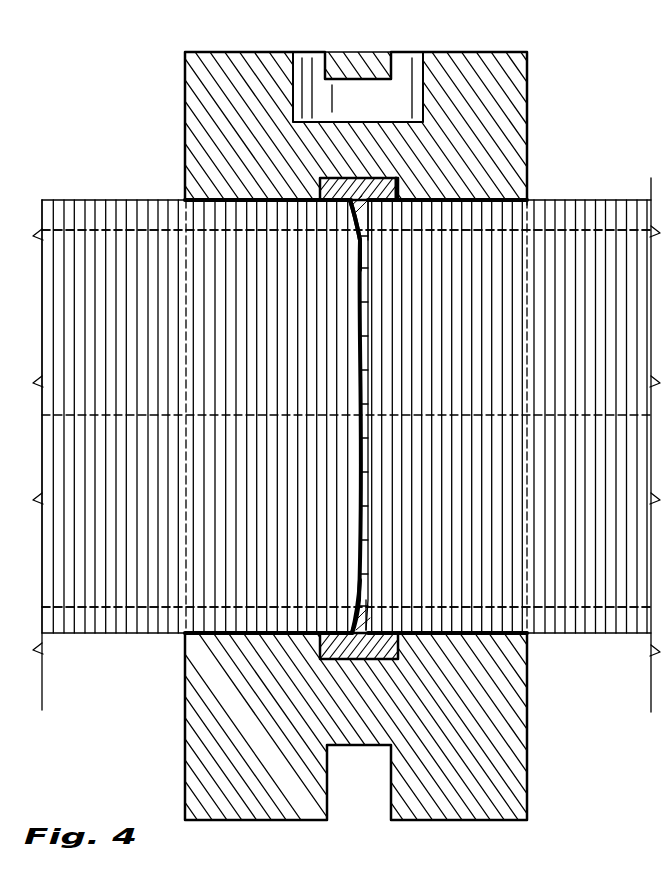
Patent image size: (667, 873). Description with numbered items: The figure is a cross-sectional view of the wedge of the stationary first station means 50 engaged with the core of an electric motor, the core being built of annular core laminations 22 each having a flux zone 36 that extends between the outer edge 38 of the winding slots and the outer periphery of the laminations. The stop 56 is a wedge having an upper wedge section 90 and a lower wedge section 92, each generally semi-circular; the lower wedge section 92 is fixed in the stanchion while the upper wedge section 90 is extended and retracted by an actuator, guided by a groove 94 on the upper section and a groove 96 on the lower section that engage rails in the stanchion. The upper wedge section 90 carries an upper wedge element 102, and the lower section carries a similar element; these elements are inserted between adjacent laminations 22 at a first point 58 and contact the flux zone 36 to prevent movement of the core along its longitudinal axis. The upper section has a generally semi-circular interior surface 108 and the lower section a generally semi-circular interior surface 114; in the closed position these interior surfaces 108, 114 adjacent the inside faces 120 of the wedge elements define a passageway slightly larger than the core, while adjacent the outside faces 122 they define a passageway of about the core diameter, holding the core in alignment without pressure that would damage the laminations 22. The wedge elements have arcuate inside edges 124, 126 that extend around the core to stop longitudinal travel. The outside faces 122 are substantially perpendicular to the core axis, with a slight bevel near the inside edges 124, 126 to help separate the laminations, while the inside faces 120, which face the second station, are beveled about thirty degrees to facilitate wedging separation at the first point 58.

The core laminations 22 is at (630, 210).
The flux zone 36 is at (3, 230).
The outer edge of the slots 38 is at (97, 240).
The first station means 50 is at (536, 48).
The stop (wedge) 56 is at (346, 640).
The first point 58 is at (368, 286).
The upper wedge section 90 is at (512, 93).
The lower wedge section 92 is at (470, 765).
The groove 94 is at (334, 62).
The groove 96 is at (391, 790).
The upper wedge element 102 is at (352, 196).
The interior surface 108 is at (500, 200).
The interior surface 114 is at (500, 633).
The inside faces 120 is at (352, 215).
The outside faces 122 is at (372, 213).
The arcuate inside edge 124 is at (358, 262).
The arcuate inside edge 126 is at (351, 612).